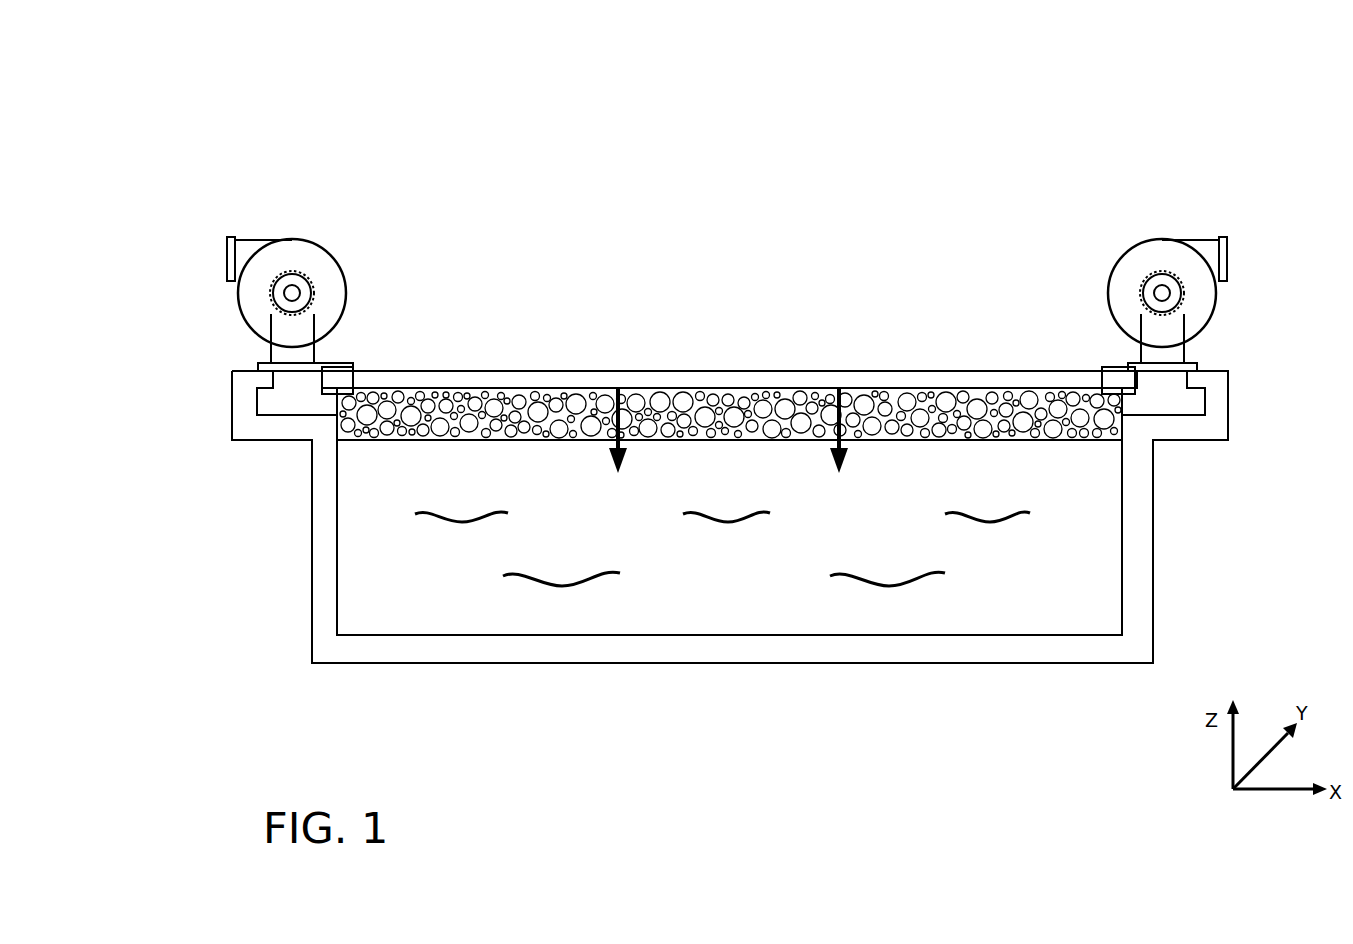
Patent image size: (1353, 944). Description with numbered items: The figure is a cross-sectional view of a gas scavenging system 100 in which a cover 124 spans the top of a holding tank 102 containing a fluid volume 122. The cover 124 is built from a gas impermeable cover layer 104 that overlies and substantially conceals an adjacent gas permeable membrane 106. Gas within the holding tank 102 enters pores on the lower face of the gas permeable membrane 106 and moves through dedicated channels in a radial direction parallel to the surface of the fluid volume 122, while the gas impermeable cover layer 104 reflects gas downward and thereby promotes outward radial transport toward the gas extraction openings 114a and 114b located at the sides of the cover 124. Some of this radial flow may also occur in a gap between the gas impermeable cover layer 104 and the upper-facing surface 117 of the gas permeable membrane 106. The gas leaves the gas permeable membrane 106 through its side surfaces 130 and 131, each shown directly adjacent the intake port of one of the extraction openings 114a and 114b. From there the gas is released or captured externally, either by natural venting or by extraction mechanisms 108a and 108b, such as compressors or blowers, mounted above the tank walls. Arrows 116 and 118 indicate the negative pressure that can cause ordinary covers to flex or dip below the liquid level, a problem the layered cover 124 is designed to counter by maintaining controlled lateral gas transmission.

The gas scavenging system 100 is at (1200, 120).
The holding tank 102 is at (312, 558).
The gas impermeable cover layer 104 is at (783, 371).
The gas permeable membrane 106 is at (957, 410).
The extraction mechanism 108a is at (275, 242).
The extraction mechanism 108b is at (1145, 242).
The gas extraction opening 114a is at (305, 386).
The gas extraction opening 114b is at (1168, 386).
The arrow 116 is at (613, 402).
The upper-facing surface 117 is at (729, 360).
The arrow 118 is at (847, 410).
The fluid volume 122 is at (1092, 558).
The cover 124 is at (692, 342).
The side surface 130 is at (1123, 412).
The side surface 131 is at (257, 410).